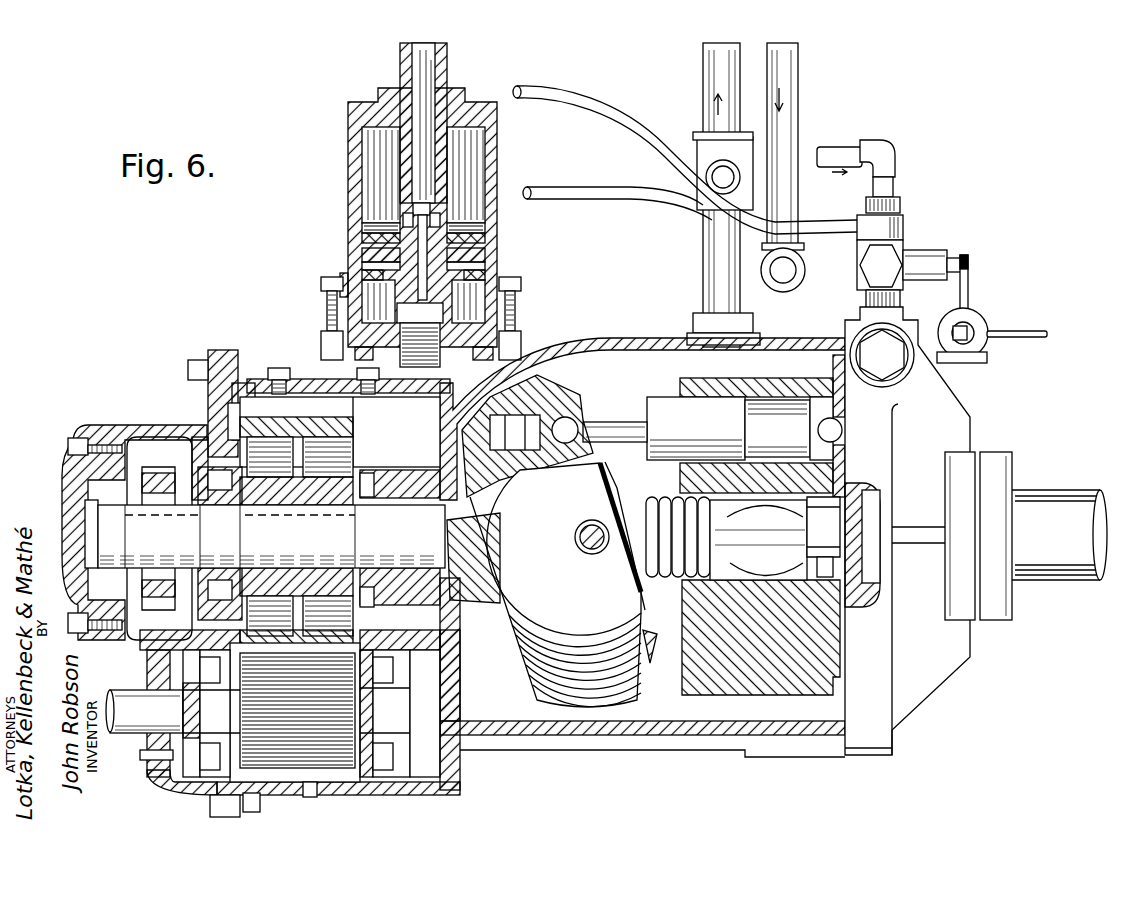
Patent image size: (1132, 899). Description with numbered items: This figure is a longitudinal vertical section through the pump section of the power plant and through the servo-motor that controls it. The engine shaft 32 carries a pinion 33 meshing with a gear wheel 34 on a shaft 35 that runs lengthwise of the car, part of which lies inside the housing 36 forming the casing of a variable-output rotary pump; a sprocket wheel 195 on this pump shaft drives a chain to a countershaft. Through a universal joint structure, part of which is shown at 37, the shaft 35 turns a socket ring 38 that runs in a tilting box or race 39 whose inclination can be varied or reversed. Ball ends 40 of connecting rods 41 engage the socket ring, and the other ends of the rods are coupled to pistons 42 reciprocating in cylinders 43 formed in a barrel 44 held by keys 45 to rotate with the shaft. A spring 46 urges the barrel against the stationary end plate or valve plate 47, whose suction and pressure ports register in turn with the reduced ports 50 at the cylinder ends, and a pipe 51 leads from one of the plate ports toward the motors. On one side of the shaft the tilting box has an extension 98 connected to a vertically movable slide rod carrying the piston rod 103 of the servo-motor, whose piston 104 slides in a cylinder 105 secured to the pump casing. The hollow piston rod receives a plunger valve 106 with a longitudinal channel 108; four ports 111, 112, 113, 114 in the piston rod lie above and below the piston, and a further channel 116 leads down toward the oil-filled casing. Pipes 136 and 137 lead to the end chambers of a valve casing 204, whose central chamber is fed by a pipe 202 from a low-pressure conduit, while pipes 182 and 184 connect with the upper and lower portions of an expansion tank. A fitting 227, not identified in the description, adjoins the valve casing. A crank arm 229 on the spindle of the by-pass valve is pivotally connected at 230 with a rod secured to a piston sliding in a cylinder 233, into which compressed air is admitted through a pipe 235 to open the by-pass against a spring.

The engine shaft 32 is at (273, 713).
The pinion 33 is at (300, 746).
The gear wheel 34 is at (340, 418).
The shaft 35 is at (265, 534).
The housing 36 is at (625, 343).
The universal joint structure 37 is at (630, 510).
The socket ring 38 is at (567, 400).
The tilting box 39 is at (535, 645).
The ball ends 40 is at (578, 426).
The connecting rods 41 is at (620, 421).
The pistons 42 is at (696, 428).
The cylinders 43 is at (789, 428).
The barrel 44 is at (752, 673).
The keys 45 is at (770, 568).
The spring 46 is at (700, 536).
The valve plate 47 is at (907, 531).
The ports 50 is at (838, 433).
The pipe 51 is at (1026, 536).
The extension 98 is at (448, 573).
The piston rod 103 is at (448, 72).
The piston 104 is at (486, 257).
The cylinder 105 is at (348, 136).
The plunger valve 106 is at (420, 172).
The longitudinal channel 108 is at (416, 244).
The port 111 is at (403, 226).
The port 112 is at (445, 230).
The port 113 is at (368, 272).
The port 114 is at (498, 274).
The channel 116 is at (444, 289).
The pipe 136 is at (577, 93).
The pipe 137 is at (583, 188).
The pipe 182 is at (712, 81).
The pipe 184 is at (790, 115).
The sprocket wheel 195 is at (157, 466).
The pipe 202 is at (851, 150).
The valve casing 204 is at (920, 246).
The nipple 227 is at (940, 259).
The crank arm 229 is at (969, 289).
The pivotal connection 230 is at (972, 333).
The cylinder 233 is at (982, 349).
The pipe 235 is at (1050, 334).